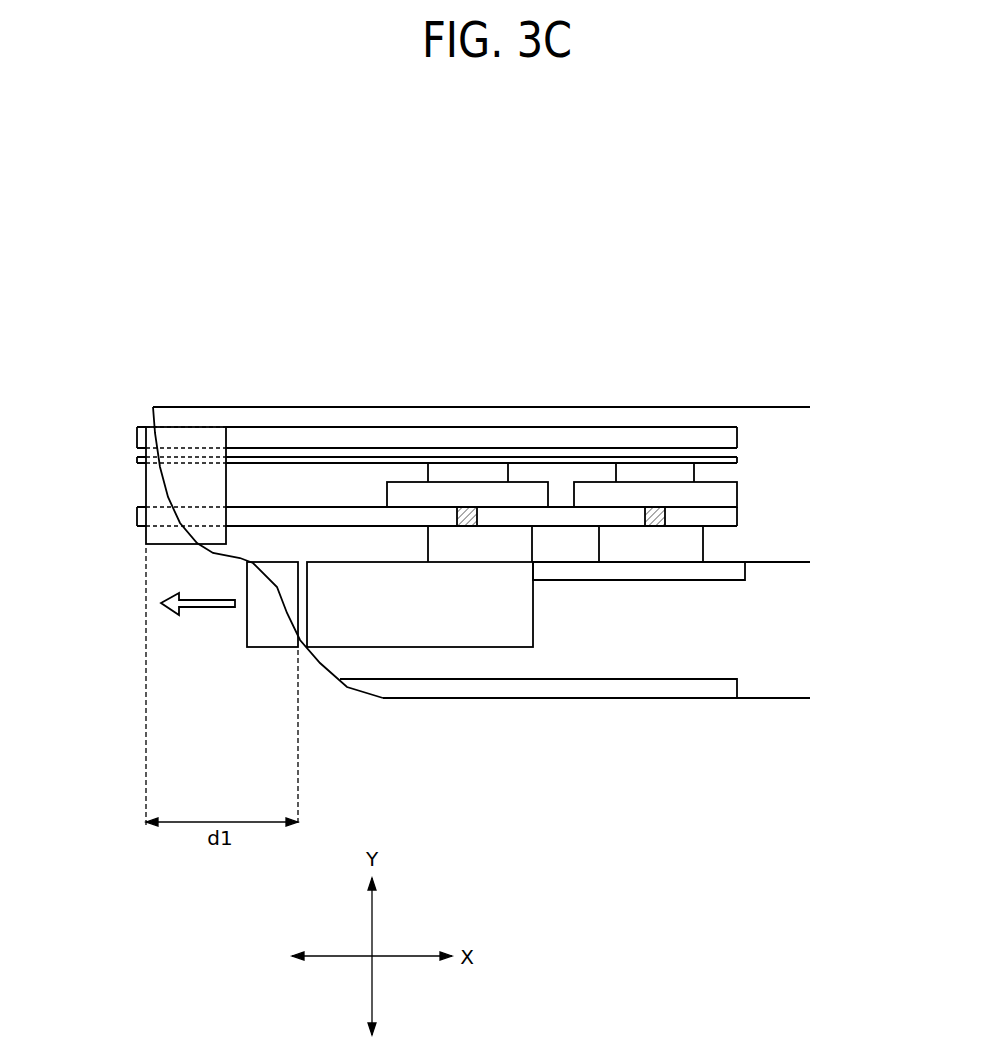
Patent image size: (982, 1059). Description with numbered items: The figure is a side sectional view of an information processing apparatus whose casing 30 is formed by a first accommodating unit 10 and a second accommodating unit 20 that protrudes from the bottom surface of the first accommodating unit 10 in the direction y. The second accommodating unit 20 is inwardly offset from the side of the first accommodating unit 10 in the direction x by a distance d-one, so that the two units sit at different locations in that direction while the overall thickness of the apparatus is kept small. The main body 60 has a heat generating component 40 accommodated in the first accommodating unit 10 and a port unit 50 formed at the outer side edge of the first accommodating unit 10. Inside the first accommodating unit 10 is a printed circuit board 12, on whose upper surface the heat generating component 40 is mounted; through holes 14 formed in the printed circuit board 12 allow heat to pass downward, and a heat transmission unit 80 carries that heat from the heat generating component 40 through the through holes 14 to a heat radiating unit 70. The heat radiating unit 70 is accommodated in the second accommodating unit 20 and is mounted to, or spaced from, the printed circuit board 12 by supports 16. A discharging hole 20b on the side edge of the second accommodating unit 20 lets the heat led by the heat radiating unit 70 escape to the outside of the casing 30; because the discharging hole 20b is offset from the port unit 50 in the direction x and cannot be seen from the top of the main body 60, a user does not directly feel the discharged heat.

The first accommodating unit 10 is at (787, 483).
The printed circuit board 12 is at (476, 517).
The through hole 14 is at (562, 428).
The supports 16 is at (565, 588).
The second accommodating unit 20 is at (787, 629).
The discharging hole 20b is at (273, 650).
The casing 30 is at (353, 405).
The heat generating component 40 is at (562, 419).
The port unit 50 is at (132, 485).
The main body 60 is at (143, 408).
The heat radiating unit 70 is at (409, 650).
The heat transmission unit 80 is at (639, 606).